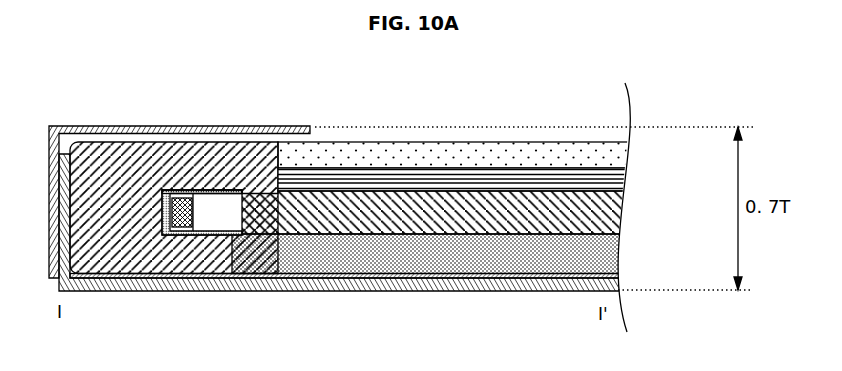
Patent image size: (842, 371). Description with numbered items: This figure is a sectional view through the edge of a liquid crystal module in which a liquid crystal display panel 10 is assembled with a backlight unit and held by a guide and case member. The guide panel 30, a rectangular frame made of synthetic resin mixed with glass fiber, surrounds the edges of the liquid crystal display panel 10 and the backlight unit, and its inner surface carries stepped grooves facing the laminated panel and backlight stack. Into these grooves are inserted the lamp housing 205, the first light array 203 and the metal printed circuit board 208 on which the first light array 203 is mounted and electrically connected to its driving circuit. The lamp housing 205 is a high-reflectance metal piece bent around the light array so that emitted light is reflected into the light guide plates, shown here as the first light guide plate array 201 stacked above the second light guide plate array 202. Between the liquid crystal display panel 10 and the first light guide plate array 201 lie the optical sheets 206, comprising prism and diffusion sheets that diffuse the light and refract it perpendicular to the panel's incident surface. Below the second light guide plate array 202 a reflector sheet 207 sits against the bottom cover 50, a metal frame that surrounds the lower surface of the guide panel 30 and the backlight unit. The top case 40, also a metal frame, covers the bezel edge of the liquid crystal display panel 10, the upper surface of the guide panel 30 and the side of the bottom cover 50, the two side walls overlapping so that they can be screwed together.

The liquid crystal display panel 10 is at (630, 156).
The guide panel 30 is at (133, 152).
The top case 40 is at (92, 127).
The bottom cover 50 is at (615, 288).
The first light guide plate array 201 is at (614, 215).
The second light guide plate array 202 is at (608, 252).
The first light array 203 is at (178, 192).
The lamp housing 205 is at (227, 192).
The optical sheets 206 is at (629, 183).
The reflector sheet 207 is at (616, 277).
The metal printed circuit board 208 is at (162, 237).